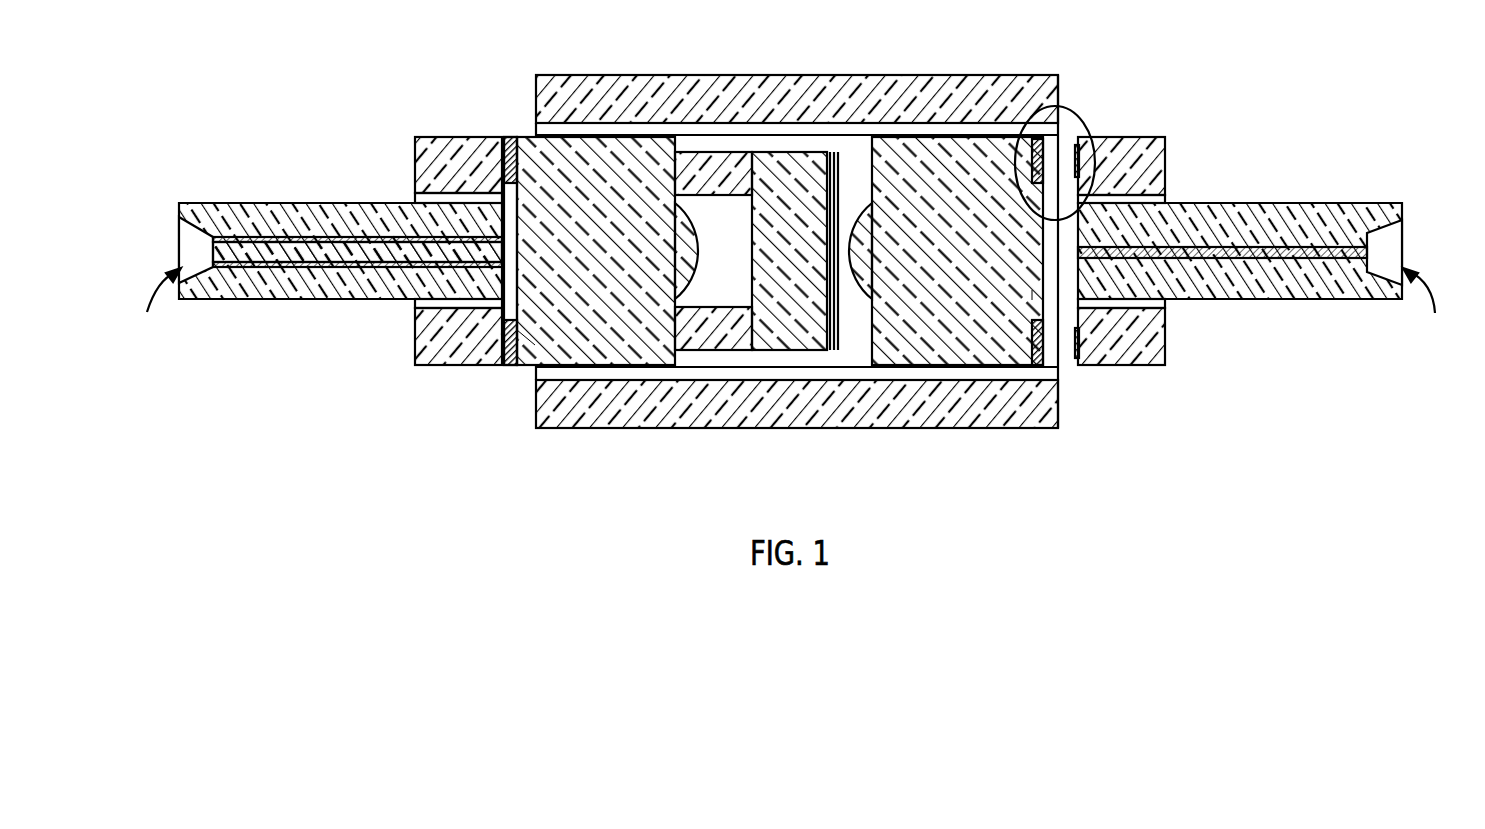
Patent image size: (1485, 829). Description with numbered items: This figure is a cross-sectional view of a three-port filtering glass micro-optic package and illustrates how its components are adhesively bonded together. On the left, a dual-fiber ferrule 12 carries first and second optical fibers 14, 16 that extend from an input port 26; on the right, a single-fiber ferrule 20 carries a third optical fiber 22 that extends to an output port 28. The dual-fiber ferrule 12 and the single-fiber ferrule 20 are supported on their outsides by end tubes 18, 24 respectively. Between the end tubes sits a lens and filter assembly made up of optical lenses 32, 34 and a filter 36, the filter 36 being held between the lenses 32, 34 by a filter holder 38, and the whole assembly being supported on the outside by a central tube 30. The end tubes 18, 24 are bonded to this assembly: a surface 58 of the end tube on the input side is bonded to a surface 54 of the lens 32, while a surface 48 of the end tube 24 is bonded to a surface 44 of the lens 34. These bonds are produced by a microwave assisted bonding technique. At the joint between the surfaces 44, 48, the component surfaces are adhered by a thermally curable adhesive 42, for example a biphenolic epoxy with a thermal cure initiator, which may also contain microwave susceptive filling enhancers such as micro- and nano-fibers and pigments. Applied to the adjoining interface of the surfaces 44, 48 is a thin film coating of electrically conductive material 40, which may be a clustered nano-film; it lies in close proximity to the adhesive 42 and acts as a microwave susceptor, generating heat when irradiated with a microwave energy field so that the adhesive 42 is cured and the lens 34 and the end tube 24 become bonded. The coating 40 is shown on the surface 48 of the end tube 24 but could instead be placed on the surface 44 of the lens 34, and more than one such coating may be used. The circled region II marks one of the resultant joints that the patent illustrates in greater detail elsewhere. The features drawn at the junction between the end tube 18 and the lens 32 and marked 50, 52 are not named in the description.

The dual-fiber ferrule 12 is at (247, 203).
The first optical fiber 14 is at (330, 237).
The second optical fiber 16 is at (317, 267).
The end tube 18 is at (417, 167).
The single-fiber ferrule 20 is at (1347, 205).
The third optical fiber 22 is at (1260, 247).
The end tube 24 is at (1160, 170).
The input port 26 is at (160, 308).
The output port 28 is at (1423, 306).
The central tube 30 is at (580, 75).
The optical lens 32 is at (620, 155).
The optical lens 34 is at (942, 150).
The filter 36 is at (787, 155).
The filter holder 38 is at (720, 155).
The thin film coating of electrically conductive material 40 is at (1076, 147).
The thermally curable adhesive 42 is at (1042, 148).
The component surface 44 is at (1034, 290).
The component surface 48 is at (1080, 327).
The gap 50 is at (502, 155).
The seal ring 52 is at (515, 142).
The surface 54 is at (525, 322).
The surface 58 is at (500, 320).
The detail region II is at (1087, 118).